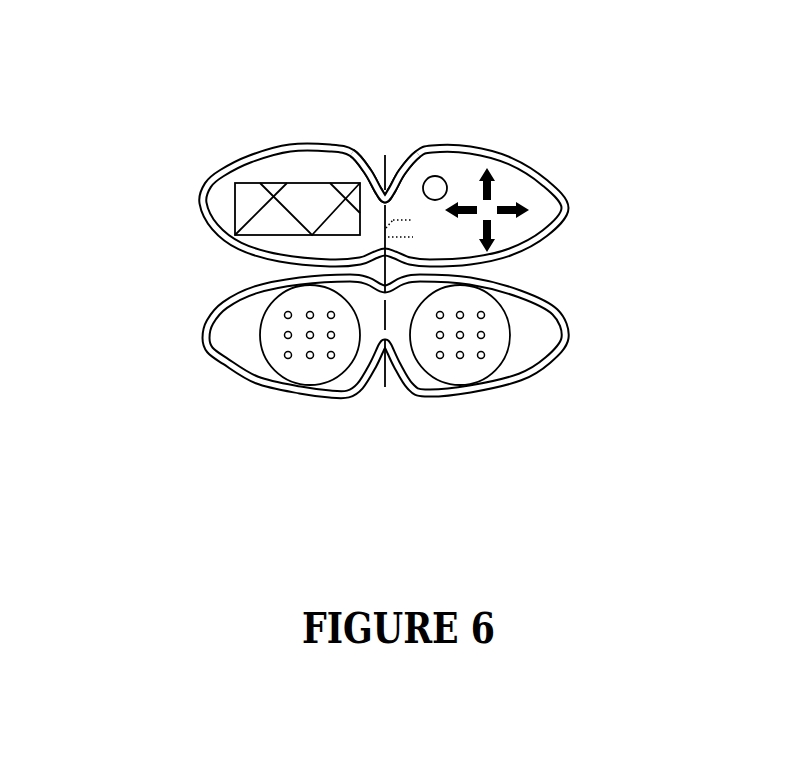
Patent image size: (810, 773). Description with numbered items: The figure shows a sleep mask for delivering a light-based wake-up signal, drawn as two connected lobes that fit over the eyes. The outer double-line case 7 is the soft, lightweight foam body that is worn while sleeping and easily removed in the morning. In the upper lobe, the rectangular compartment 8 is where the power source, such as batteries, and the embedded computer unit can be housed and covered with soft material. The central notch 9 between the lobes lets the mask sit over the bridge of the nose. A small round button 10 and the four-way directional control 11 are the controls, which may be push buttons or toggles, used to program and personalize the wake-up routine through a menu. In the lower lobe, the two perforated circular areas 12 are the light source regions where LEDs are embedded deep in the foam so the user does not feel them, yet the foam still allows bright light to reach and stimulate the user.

The shell halves of the case 7 is at (294, 279).
The battery compartment 8 is at (293, 201).
The central notch / hinge 9 is at (312, 100).
The button 10 is at (504, 100).
The directional control 11 is at (513, 224).
The speaker grilles 12 is at (385, 428).